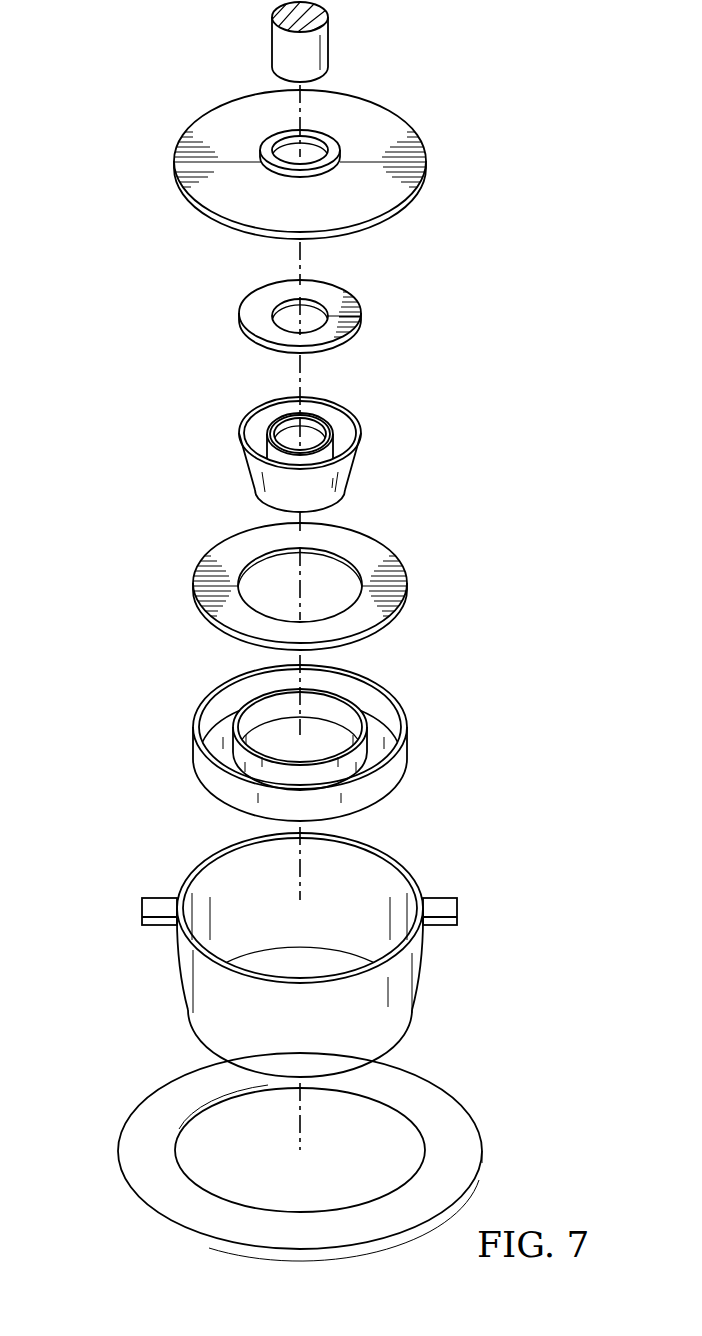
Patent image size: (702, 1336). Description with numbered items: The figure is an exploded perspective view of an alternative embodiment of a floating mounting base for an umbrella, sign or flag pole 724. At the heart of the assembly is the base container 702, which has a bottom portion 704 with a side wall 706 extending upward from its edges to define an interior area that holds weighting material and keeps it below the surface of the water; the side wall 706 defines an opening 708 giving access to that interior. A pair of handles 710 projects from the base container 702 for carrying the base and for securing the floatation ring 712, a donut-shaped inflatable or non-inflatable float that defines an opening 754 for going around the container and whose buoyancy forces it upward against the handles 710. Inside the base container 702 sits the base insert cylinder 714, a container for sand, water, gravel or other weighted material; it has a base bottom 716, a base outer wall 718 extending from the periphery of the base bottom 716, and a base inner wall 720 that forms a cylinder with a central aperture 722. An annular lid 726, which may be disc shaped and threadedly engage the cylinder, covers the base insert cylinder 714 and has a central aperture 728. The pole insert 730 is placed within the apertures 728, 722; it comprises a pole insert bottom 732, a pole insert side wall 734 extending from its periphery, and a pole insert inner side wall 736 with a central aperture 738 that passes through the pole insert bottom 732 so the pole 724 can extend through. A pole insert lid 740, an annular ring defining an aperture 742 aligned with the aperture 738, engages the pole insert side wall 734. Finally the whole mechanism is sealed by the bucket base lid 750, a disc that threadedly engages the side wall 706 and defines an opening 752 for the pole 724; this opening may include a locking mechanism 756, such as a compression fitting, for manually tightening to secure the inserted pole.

The base container 702 is at (454, 985).
The bottom portion 704 is at (402, 1040).
The side wall 706 is at (184, 973).
The opening 708 is at (386, 879).
The handles 710 is at (149, 898).
The floatation ring 712 is at (117, 1153).
The base insert cylinder 714 is at (168, 721).
The base bottom 716 is at (393, 792).
The base outer wall 718 is at (405, 740).
The base inner wall 720 is at (210, 748).
The central aperture 722 is at (258, 705).
The pole 724 is at (330, 39).
The annular lid 726 is at (395, 624).
The central aperture 728 is at (245, 597).
The pole insert 730 is at (389, 453).
The pole insert bottom 732 is at (340, 505).
The pole insert side wall 734 is at (245, 463).
The pole insert inner side wall 736 is at (357, 428).
The central aperture 738 is at (283, 428).
The pole insert lid 740 is at (355, 348).
The aperture 742 is at (282, 326).
The bucket base lid 750 is at (400, 213).
The opening 752 is at (287, 150).
The opening 754 is at (413, 1170).
The locking mechanism 756 is at (337, 143).